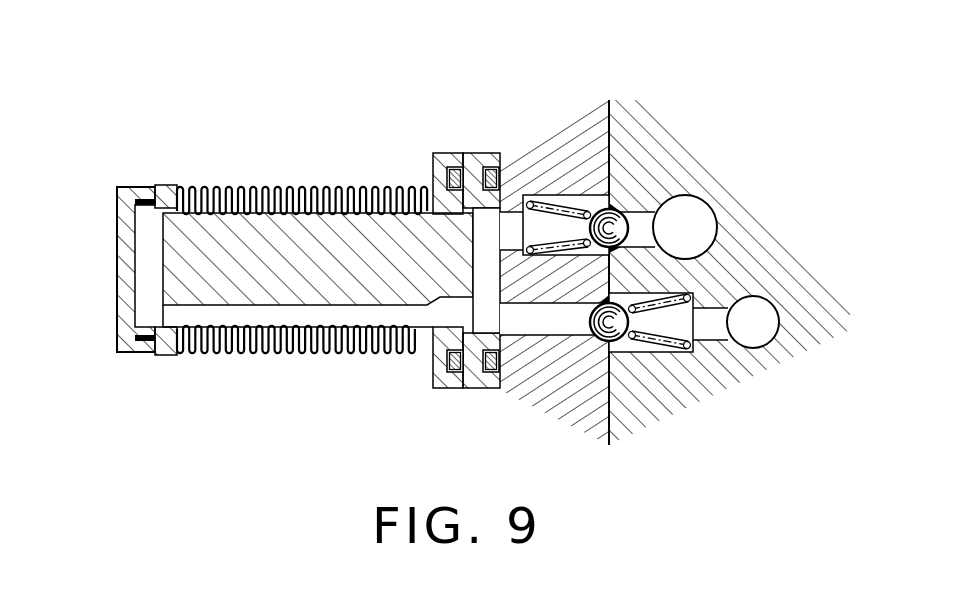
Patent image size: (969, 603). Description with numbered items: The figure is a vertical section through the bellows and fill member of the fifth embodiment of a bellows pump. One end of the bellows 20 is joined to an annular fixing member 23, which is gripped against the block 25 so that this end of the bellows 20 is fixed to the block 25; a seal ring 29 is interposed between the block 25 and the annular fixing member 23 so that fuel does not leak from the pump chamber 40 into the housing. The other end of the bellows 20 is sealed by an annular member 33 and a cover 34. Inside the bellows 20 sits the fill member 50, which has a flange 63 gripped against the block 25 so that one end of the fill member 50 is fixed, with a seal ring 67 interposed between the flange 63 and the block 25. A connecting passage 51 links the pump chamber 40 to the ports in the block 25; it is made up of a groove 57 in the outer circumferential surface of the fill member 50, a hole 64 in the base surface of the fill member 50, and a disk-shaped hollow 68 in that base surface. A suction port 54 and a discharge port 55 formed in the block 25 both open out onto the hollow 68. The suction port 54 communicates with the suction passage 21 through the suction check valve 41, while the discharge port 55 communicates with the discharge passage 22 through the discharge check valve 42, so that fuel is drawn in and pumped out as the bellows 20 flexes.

The bellows 20 is at (207, 188).
The fill member 50 is at (283, 230).
The seal ring 29 is at (416, 158).
The flange 63 is at (475, 152).
The seal ring 67 is at (487, 158).
The hollow 68 is at (510, 190).
The suction port 54 is at (552, 195).
The block 25 is at (590, 112).
The suction check valve 41 is at (612, 205).
The suction passage 21 is at (688, 215).
The pump chamber 40 is at (148, 260).
The cover 34 is at (120, 335).
The annular member 33 is at (163, 355).
The groove 57 is at (298, 370).
The connecting passage 51 is at (345, 312).
The annular fixing member 23 is at (447, 390).
The hole 64 is at (468, 390).
The discharge port 55 is at (553, 322).
The discharge check valve 42 is at (632, 342).
The discharge passage 22 is at (758, 335).